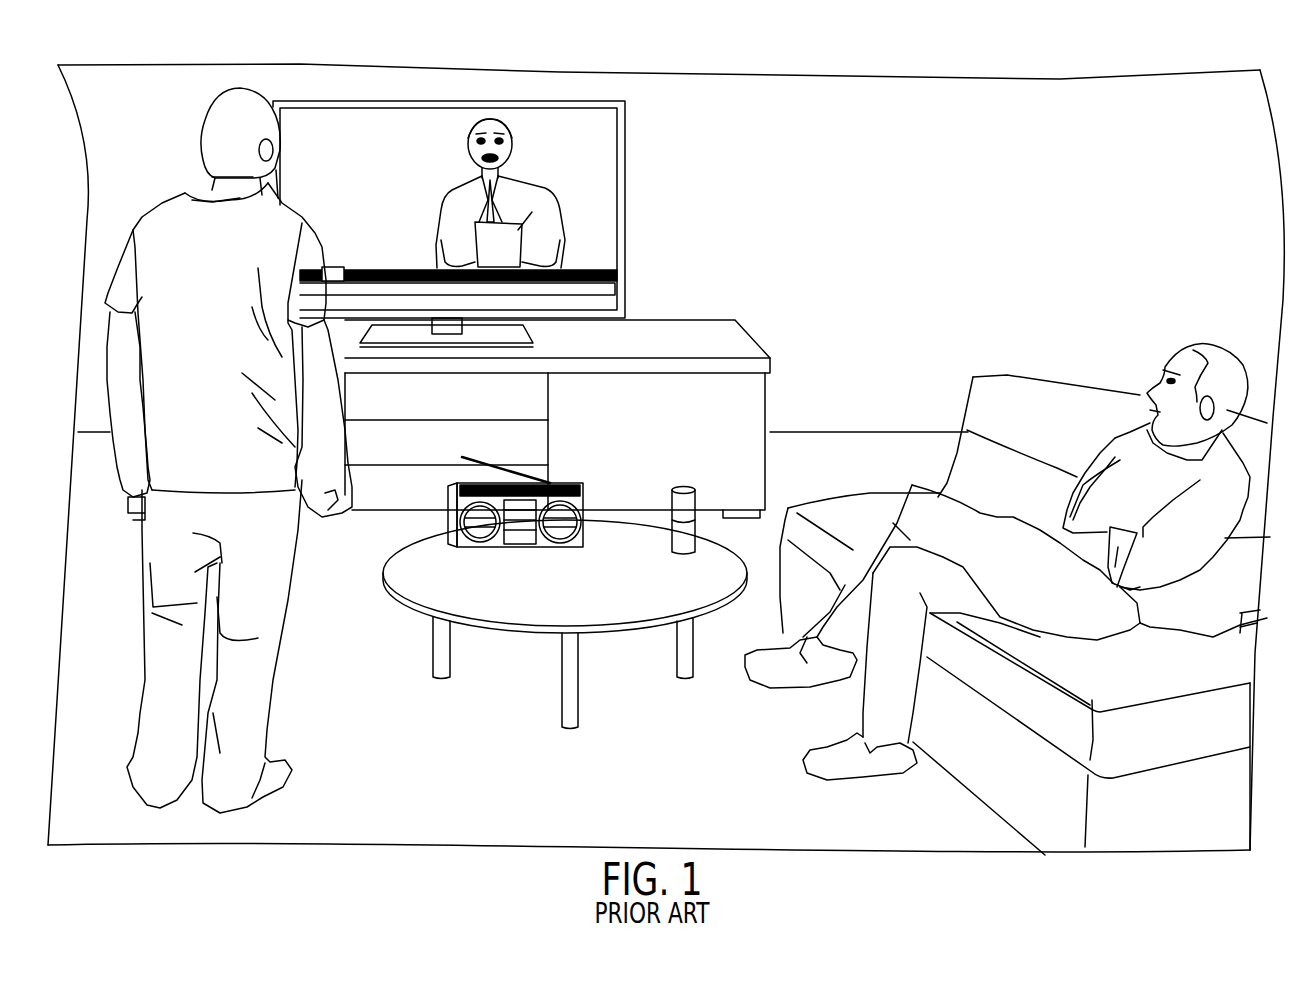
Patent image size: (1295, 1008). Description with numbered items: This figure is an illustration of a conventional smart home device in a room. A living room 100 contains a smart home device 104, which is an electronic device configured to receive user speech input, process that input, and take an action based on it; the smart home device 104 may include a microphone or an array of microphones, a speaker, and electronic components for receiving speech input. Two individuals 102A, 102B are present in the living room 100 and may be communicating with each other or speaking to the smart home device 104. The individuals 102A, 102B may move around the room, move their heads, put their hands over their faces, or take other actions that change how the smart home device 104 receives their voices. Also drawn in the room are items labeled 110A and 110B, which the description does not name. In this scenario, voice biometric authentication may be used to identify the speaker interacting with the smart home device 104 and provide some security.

The living room 100 is at (1136, 70).
The individual 102A is at (1213, 345).
The individual 102B is at (200, 115).
The television 110A is at (623, 183).
The radio / boombox 110B is at (557, 547).
The smart home device 104 is at (680, 552).